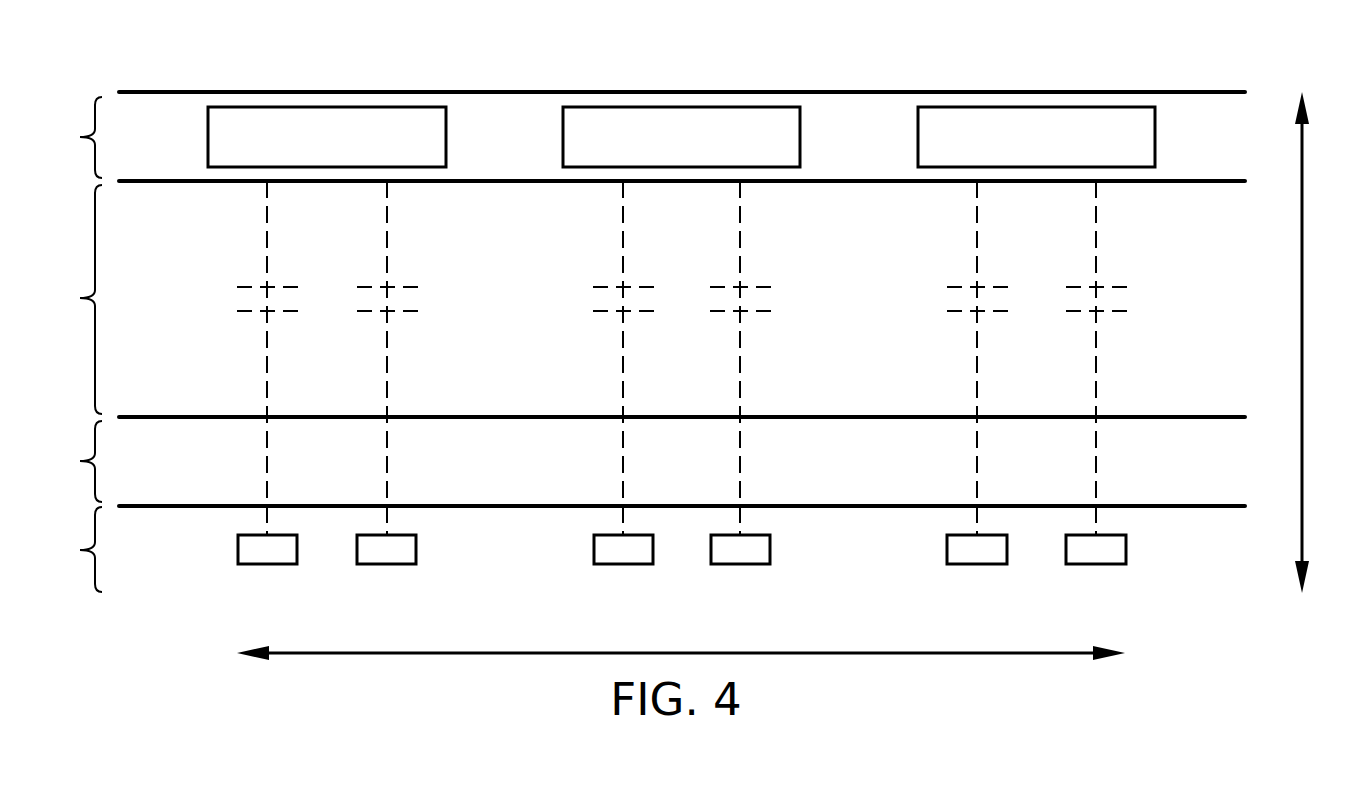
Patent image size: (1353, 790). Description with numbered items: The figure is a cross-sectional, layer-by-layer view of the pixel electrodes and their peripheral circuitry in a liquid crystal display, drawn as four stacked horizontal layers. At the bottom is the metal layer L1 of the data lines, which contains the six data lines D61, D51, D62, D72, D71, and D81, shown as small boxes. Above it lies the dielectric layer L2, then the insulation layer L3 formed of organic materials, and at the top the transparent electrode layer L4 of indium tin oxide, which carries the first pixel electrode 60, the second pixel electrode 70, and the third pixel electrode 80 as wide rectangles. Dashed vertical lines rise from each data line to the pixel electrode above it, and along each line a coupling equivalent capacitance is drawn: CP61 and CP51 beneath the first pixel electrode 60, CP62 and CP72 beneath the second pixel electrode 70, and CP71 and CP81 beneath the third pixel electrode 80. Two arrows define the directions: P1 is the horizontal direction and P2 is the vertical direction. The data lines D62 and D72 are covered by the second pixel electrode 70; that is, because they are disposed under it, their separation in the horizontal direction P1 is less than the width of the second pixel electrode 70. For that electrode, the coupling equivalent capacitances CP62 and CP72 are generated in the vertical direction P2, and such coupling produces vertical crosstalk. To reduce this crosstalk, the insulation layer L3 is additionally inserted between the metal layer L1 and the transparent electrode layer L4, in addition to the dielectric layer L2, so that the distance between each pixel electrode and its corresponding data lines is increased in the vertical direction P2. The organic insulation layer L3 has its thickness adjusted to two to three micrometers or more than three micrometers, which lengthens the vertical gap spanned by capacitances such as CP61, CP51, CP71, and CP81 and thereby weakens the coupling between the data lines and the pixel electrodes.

The first pixel electrode 60 is at (326, 107).
The second pixel electrode 70 is at (680, 107).
The third pixel electrode 80 is at (1035, 107).
The coupling equivalent capacitance CP51 is at (422, 299).
The coupling equivalent capacitance CP61 is at (232, 299).
The coupling equivalent capacitance CP62 is at (588, 299).
The coupling equivalent capacitance CP71 is at (942, 299).
The coupling equivalent capacitance CP72 is at (775, 299).
The coupling equivalent capacitance CP81 is at (1131, 299).
The data line D51 is at (386, 567).
The data line D61 is at (267, 567).
The data line D62 is at (623, 567).
The data line D71 is at (977, 567).
The data line D72 is at (740, 567).
The data line D81 is at (1096, 567).
The metal layer L1 is at (71, 549).
The dielectric layer L2 is at (71, 461).
The insulation layer L3 is at (71, 299).
The transparent electrode layer L4 is at (71, 137).
The horizontal direction P1 is at (681, 638).
The vertical direction P2 is at (1319, 342).